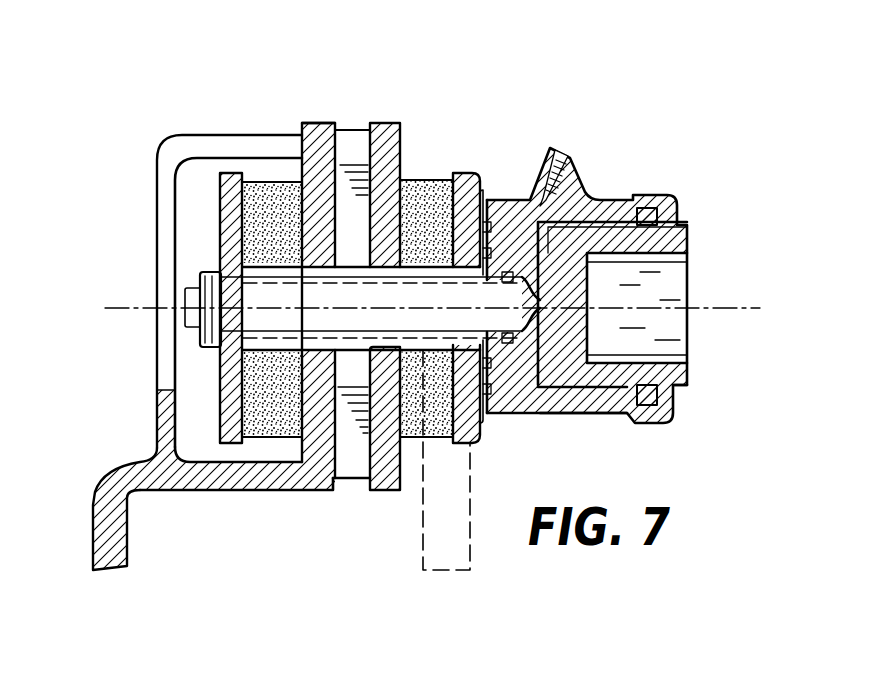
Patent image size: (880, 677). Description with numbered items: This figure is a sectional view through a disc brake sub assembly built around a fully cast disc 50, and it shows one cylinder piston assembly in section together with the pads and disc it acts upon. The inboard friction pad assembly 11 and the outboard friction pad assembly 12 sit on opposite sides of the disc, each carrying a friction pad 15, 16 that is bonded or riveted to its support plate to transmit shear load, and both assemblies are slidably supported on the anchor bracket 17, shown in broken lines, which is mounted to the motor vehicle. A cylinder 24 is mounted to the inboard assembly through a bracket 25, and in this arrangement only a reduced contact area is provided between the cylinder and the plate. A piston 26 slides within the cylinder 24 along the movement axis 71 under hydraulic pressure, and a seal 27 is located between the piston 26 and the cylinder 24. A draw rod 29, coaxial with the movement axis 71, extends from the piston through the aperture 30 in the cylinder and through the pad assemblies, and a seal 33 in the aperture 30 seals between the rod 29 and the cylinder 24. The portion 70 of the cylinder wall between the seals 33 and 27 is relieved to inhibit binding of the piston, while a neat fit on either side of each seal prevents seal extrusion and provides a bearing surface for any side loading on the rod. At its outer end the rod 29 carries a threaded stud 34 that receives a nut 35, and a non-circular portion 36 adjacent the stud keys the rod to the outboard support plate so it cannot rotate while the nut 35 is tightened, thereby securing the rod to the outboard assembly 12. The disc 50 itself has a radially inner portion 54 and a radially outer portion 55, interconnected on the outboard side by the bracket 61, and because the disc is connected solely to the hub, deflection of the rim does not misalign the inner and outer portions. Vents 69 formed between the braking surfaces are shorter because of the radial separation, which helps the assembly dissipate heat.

The inboard friction pad assembly 11 is at (483, 150).
The outboard friction pad assembly 12 is at (206, 184).
The friction pad 15 is at (427, 190).
The friction pad 16 is at (258, 180).
The anchor bracket 17 is at (440, 545).
The cylinder 24 is at (600, 215).
The bracket 25 is at (490, 422).
The piston 26 is at (690, 385).
The seal 27 is at (653, 212).
The rod 29 is at (292, 314).
The aperture 30 is at (527, 325).
The seal 33 is at (637, 308).
The threaded stud 34 is at (190, 291).
The nut 35 is at (205, 349).
The portion 36 is at (210, 329).
The disc 50 is at (377, 102).
The radially inner portion 54 is at (381, 476).
The radially outer portion 55 is at (350, 150).
The bracket 61 is at (160, 208).
The vents 69 is at (347, 212).
The portion of the cylinder wall 70 is at (575, 414).
The movement axis 71 is at (735, 300).